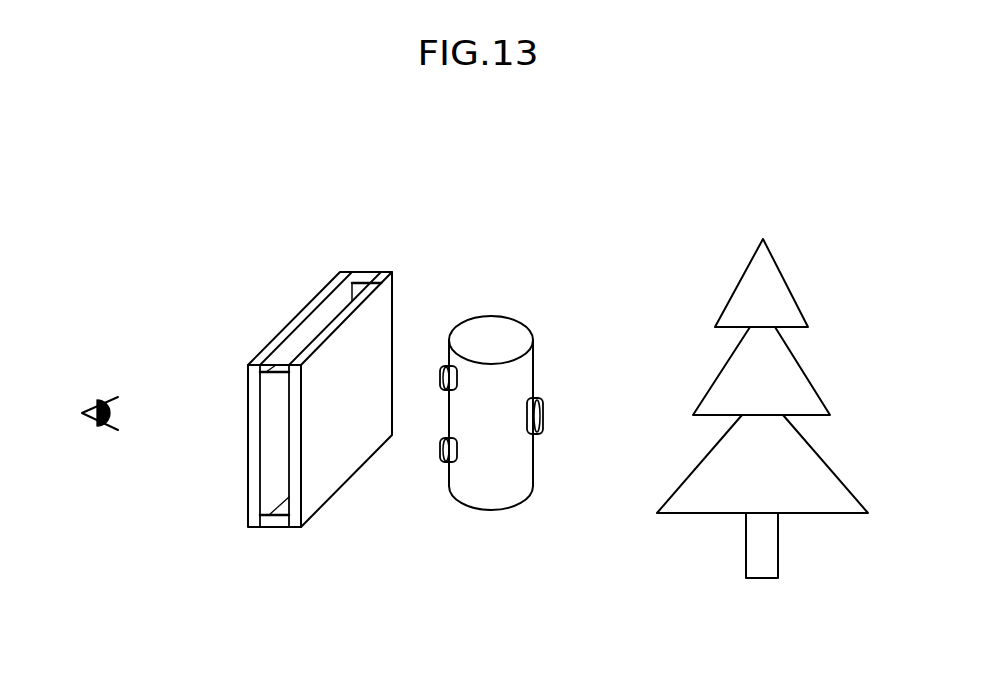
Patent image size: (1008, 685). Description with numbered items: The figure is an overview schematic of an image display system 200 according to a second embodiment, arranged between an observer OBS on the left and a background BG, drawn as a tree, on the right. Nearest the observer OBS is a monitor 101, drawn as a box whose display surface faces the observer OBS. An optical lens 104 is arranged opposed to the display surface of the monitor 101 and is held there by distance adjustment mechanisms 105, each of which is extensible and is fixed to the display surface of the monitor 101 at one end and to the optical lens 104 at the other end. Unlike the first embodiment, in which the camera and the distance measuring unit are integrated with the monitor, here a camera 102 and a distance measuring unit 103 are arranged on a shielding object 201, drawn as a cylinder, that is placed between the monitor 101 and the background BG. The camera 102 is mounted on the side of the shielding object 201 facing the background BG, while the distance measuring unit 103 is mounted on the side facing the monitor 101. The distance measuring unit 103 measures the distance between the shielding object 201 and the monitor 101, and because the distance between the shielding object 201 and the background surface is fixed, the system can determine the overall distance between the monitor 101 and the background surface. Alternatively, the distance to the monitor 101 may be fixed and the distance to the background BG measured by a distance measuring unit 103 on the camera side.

The image display system 200 is at (560, 126).
The monitor 101 is at (392, 272).
The optical lens 104 is at (303, 317).
The distance adjustment mechanism 105 is at (352, 272).
The camera 102 is at (546, 415).
The distance measuring unit 103 is at (440, 386).
The shielding object 201 is at (500, 324).
The observer OBS is at (97, 404).
The background BG is at (770, 258).